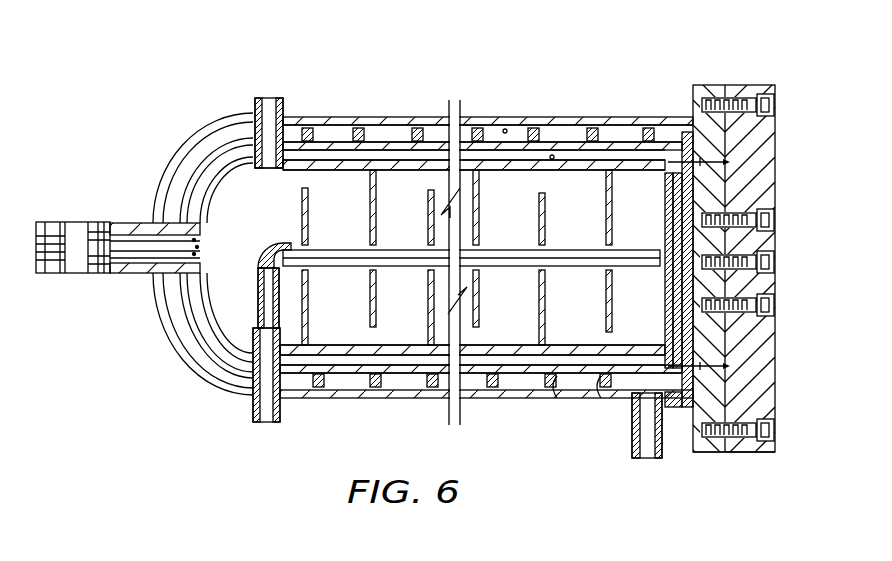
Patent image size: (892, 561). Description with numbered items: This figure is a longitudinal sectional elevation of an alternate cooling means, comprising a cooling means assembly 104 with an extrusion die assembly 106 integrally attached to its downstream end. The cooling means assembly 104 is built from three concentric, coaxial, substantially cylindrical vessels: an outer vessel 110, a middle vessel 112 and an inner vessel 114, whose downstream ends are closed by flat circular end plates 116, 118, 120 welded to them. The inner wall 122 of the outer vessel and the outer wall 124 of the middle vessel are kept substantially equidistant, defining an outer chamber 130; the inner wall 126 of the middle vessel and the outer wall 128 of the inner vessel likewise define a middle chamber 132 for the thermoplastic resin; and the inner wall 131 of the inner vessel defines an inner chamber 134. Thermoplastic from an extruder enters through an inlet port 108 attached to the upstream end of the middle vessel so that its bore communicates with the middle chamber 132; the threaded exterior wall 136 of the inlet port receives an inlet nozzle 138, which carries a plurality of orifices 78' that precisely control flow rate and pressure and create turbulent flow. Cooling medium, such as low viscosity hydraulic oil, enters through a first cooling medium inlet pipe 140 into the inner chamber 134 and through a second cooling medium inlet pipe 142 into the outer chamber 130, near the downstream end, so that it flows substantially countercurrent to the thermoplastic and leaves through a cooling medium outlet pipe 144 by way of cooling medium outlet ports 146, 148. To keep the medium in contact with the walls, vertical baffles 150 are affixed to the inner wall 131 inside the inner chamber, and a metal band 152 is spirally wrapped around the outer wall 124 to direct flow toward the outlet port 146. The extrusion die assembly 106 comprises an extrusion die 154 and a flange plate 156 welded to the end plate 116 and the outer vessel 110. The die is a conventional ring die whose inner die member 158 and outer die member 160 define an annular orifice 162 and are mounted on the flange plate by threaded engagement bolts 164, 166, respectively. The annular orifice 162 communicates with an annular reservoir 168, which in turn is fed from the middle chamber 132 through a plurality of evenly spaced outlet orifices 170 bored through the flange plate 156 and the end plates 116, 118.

The orifices 78' is at (183, 239).
The cooling means assembly 104 is at (492, 90).
The extrusion die assembly 106 is at (740, 78).
The inlet port 108 is at (128, 216).
The outer vessel 110 is at (406, 124).
The middle vessel 112 is at (373, 124).
The inner vessel 114 is at (332, 125).
The end plate 116 is at (684, 130).
The end plate 118 is at (667, 292).
The end plate 120 is at (672, 316).
The inner wall of outer vessel 122 is at (506, 128).
The outer wall of middle vessel 124 is at (522, 135).
The inner wall of middle vessel 126 is at (554, 155).
The outer wall of inner vessel 128 is at (600, 142).
The outer chamber 130 is at (307, 399).
The inner wall of inner vessel 131 is at (448, 118).
The middle chamber 132 is at (205, 330).
The inner chamber 134 is at (413, 330).
The exterior wall of inlet port 136 is at (126, 273).
The inlet nozzle 138 is at (56, 222).
The first cooling medium inlet pipe 140 is at (260, 412).
The second cooling medium inlet pipe 142 is at (633, 453).
The cooling medium outlet pipe 144 is at (257, 97).
The cooling medium outlet port 146 is at (253, 116).
The cooling medium outlet port 148 is at (258, 169).
The vertical baffles 150 is at (478, 297).
The metal band 152 is at (655, 130).
The extrusion die 154 is at (781, 149).
The flange plate 156 is at (695, 453).
The inner die member 158 is at (752, 337).
The outer die member 160 is at (728, 453).
The annular orifice 162 is at (729, 161).
The threaded engagement bolts 164 is at (758, 96).
The threaded engagement bolts 166 is at (776, 298).
The annular reservoir 168 is at (729, 163).
The outlet orifices 170 is at (729, 160).